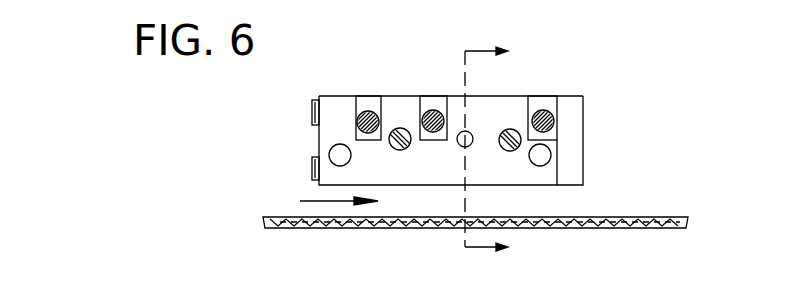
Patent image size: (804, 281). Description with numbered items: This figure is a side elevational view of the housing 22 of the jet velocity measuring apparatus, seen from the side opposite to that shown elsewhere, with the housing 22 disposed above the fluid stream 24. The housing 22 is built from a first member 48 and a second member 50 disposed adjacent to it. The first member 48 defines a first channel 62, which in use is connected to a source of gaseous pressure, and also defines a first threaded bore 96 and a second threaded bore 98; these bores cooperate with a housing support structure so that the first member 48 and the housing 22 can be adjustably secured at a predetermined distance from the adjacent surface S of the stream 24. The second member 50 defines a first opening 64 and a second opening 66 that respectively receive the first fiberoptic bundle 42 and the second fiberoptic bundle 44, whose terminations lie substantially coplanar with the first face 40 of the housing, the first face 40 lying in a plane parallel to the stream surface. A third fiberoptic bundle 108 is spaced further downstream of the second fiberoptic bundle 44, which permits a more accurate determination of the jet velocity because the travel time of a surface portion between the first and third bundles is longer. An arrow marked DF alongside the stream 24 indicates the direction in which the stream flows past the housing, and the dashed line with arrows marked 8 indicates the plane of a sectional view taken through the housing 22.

The housing 22 is at (402, 92).
The first member 48 is at (504, 101).
The first face 40 is at (503, 178).
The third fiberoptic bundle 108 is at (358, 128).
The second member 50 is at (360, 108).
The first opening 64 is at (368, 112).
The second opening 66 is at (432, 110).
The first fiberoptic bundle 42 is at (372, 137).
The second fiberoptic bundle 44 is at (430, 132).
The second threaded bore 98 is at (330, 150).
The first threaded bore 96 is at (550, 159).
The first channel 62 is at (459, 143).
The section line 8- 8 is at (495, 151).
The fluid stream 24 is at (628, 229).
The adjacent surface of the stream S is at (630, 217).
The direction of feed DF is at (332, 204).